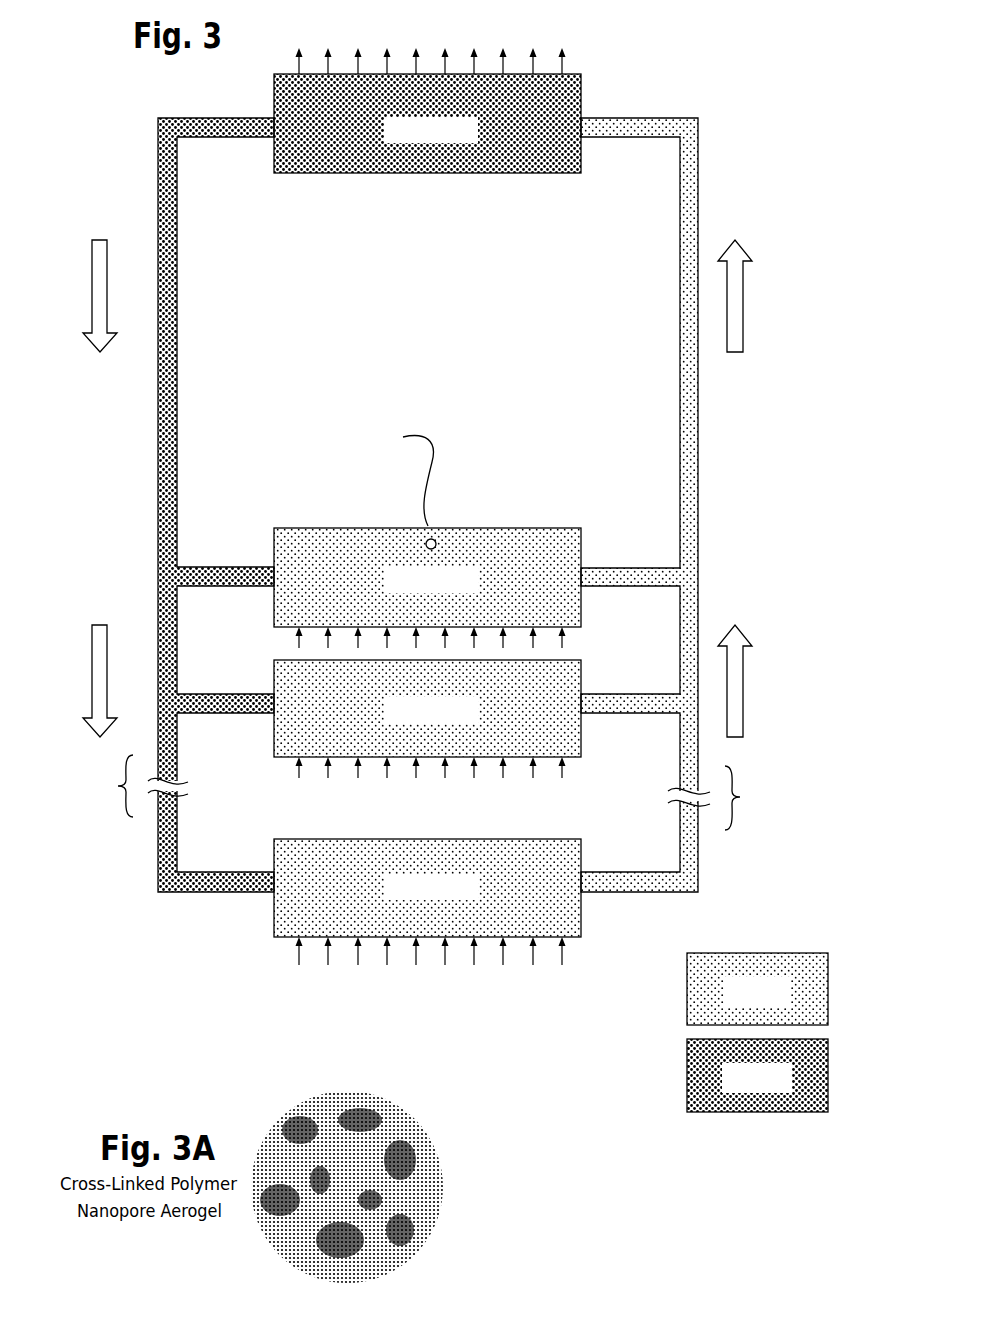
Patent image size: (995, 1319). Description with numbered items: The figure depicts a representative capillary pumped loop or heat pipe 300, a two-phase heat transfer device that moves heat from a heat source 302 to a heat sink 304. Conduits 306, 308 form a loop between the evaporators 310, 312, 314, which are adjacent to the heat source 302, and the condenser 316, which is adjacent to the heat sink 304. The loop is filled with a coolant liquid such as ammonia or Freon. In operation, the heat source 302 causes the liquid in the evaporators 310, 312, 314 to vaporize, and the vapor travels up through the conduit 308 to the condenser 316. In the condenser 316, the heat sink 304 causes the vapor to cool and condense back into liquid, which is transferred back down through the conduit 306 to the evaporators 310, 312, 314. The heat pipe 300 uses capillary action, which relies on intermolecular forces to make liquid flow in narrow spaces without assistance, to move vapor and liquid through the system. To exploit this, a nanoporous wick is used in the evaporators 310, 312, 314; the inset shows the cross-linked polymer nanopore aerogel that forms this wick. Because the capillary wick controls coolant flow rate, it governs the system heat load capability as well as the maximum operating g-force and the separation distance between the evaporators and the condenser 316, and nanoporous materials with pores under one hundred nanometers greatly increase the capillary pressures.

The capillary pumped loop/heat pipe 300 is at (727, 88).
The heat source 302 is at (480, 987).
The heat sink 304 is at (487, 17).
The conduit 306 is at (157, 197).
The conduit 308 is at (701, 187).
The evaporator 310 is at (582, 545).
The evaporator 312 is at (582, 668).
The evaporator 314 is at (567, 912).
The condenser 316 is at (582, 99).